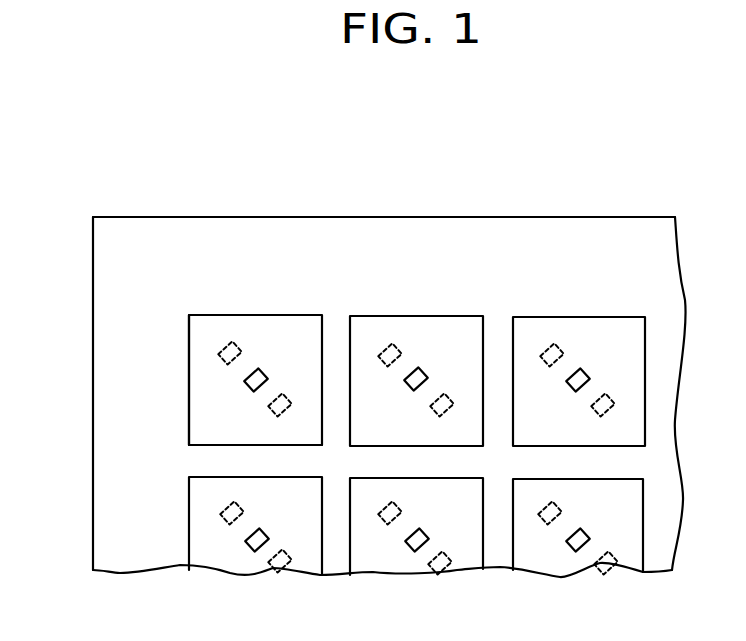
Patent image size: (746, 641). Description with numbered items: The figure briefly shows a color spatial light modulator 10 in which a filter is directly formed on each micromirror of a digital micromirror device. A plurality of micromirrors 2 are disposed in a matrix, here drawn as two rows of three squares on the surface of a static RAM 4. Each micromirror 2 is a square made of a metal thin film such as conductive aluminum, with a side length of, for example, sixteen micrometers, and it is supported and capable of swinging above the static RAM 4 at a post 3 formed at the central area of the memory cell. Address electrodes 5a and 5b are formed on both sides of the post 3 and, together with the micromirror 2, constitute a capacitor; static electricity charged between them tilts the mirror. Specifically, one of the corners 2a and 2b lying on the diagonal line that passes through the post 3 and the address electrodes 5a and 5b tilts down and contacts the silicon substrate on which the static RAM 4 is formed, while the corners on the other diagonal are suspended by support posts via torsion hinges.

The color spatial light modulator 10 is at (592, 170).
The static RAM 4 is at (135, 188).
The micromirror 2 is at (212, 386).
The corner 2a is at (189, 319).
The corner 2b is at (322, 445).
The post 3 is at (257, 372).
The address electrode 5a is at (229, 345).
The address electrode 5b is at (276, 408).